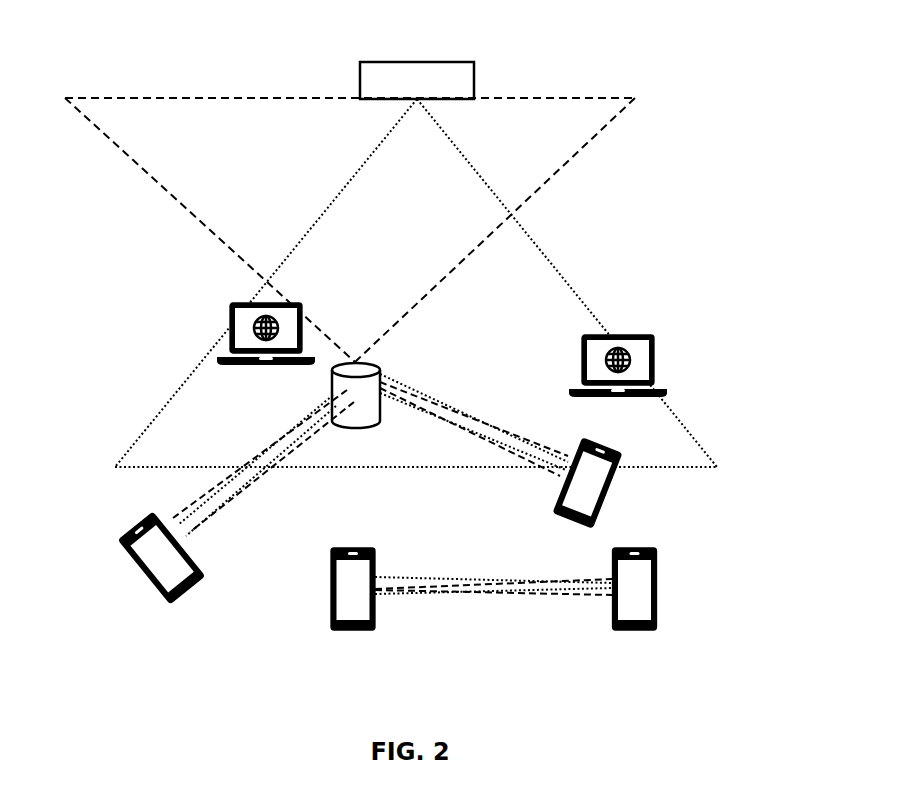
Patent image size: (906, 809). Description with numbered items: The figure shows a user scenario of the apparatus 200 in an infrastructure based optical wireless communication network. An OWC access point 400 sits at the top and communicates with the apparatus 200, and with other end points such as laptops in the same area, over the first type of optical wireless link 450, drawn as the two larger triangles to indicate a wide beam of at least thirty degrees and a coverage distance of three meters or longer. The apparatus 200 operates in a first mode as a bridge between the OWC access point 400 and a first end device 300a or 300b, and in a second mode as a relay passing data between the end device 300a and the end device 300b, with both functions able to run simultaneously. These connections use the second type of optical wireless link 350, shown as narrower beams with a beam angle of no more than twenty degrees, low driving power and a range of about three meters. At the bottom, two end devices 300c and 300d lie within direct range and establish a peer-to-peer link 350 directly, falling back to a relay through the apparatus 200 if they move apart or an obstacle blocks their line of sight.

The OWC access point 400 is at (474, 80).
The first type of optical wireless link 450 is at (547, 190).
The apparatus 200 is at (355, 430).
The second type of optical wireless link 350 is at (262, 478).
The end device 300a is at (128, 565).
The end device 300b is at (600, 510).
The end device 300c is at (326, 587).
The end device 300d is at (657, 590).